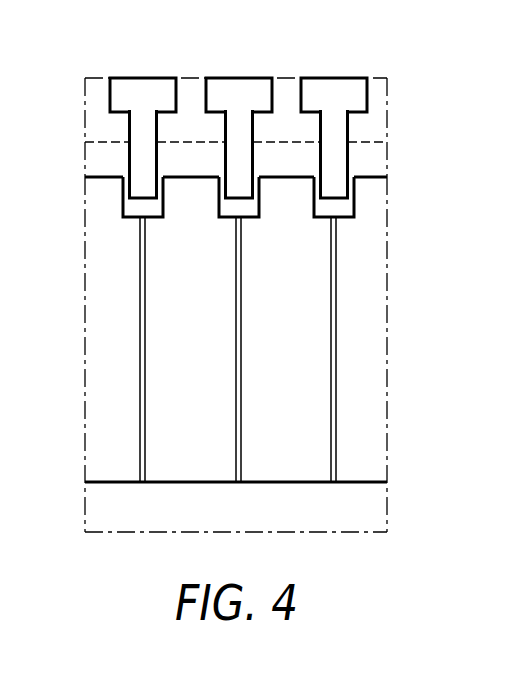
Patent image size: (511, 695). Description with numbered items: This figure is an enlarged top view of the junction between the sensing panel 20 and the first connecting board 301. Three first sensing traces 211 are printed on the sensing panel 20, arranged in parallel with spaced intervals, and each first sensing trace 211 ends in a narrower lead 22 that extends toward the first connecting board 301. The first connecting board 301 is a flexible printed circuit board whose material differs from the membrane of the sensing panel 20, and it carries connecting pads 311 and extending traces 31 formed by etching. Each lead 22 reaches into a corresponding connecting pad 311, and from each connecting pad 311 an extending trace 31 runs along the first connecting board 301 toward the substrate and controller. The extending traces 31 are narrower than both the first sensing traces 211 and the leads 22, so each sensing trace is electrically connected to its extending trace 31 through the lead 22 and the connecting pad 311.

The sensing panel 20 is at (383, 95).
The first sensing traces 211 is at (143, 88).
The lead 22 is at (142, 157).
The connecting pads 311 is at (357, 197).
The extending traces 31 is at (337, 288).
The first connecting board 301 is at (373, 380).